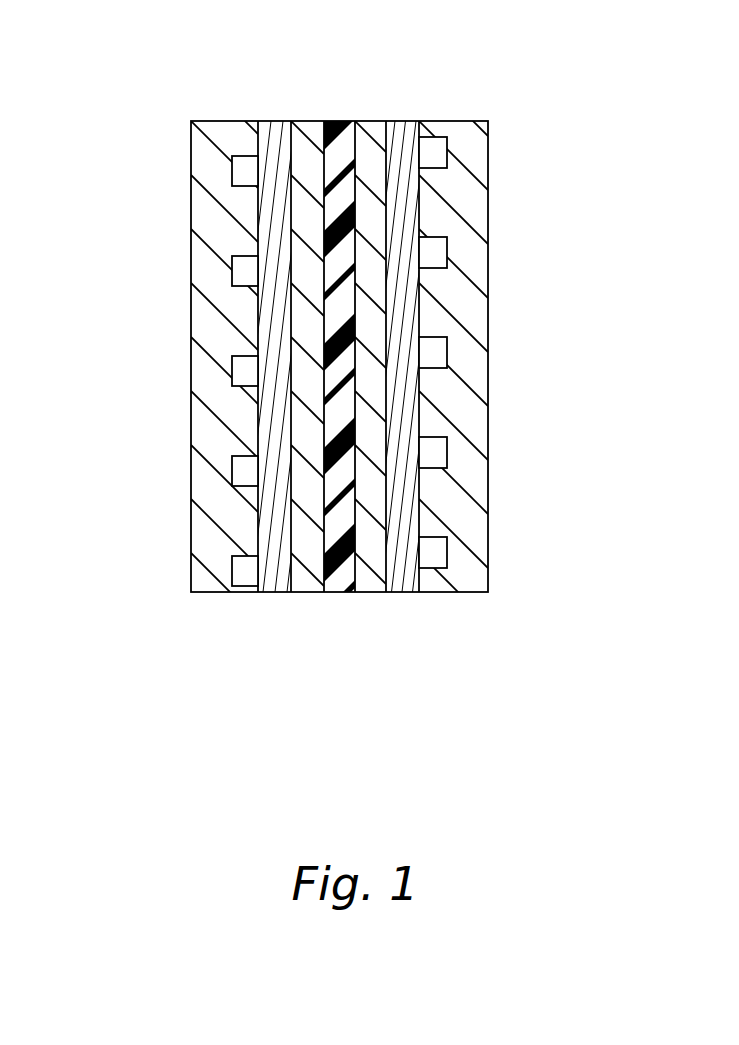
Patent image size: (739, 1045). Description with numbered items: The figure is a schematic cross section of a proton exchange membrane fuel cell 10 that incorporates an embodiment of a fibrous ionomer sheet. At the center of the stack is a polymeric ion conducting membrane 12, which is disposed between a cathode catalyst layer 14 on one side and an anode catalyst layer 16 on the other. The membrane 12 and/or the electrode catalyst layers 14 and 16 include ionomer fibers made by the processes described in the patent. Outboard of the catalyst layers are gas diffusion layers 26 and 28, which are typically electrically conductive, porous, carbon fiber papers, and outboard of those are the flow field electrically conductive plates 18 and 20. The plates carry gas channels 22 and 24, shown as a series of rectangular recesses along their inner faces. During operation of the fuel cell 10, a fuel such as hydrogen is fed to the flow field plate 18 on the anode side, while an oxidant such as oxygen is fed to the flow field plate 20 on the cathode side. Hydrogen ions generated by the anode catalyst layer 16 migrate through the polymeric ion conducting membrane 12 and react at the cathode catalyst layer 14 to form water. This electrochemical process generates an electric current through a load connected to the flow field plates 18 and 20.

The proton exchange membrane fuel cell 10 is at (118, 121).
The polymeric ion conducting membrane 12 is at (342, 125).
The cathode catalyst layer 14 is at (313, 124).
The anode catalyst layer 16 is at (368, 125).
The flow field electrically conductive plate 18 is at (445, 122).
The flow field electrically conductive plate 20 is at (227, 130).
The gas channel 22 is at (430, 153).
The gas channel 24 is at (250, 166).
The gas diffusion layer 26 is at (405, 122).
The gas diffusion layer 28 is at (282, 125).